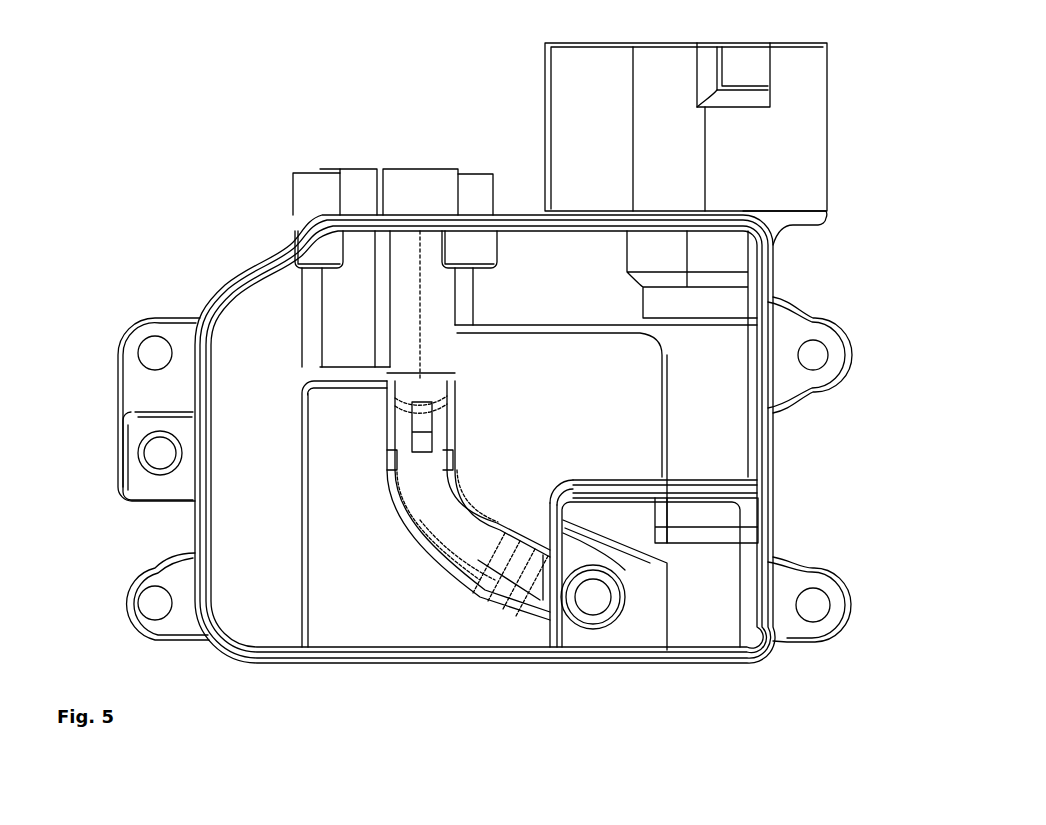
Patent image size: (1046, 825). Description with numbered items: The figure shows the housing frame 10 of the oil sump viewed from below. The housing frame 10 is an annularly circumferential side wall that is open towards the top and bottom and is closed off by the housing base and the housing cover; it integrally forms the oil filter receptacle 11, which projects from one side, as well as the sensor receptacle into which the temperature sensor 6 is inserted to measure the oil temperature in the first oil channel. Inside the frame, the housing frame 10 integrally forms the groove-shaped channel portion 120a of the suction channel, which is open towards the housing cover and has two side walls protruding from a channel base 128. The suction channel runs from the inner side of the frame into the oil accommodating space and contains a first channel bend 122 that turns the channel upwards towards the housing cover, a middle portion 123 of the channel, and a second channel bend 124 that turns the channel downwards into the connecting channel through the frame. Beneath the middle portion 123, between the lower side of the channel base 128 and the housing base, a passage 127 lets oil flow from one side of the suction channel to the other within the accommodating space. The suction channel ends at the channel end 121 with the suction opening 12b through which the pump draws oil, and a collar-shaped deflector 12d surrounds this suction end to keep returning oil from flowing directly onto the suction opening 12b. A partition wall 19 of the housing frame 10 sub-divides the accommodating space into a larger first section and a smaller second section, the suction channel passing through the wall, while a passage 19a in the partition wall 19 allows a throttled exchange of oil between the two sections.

The housing frame 10 is at (468, 436).
The oil filter receptacle 11 is at (623, 133).
The temperature sensor 6 is at (162, 460).
The second channel bend 124 is at (418, 418).
The channel portion 120a is at (388, 513).
The middle portion of the channel 123 is at (442, 510).
The channel base 128 is at (423, 523).
The passage 127 is at (448, 543).
The first channel bend 122 is at (527, 570).
The partition wall 19 is at (553, 575).
The passage 19a is at (707, 490).
The channel end 121 is at (647, 567).
The suction opening 12b is at (593, 597).
The deflector 12d is at (647, 610).